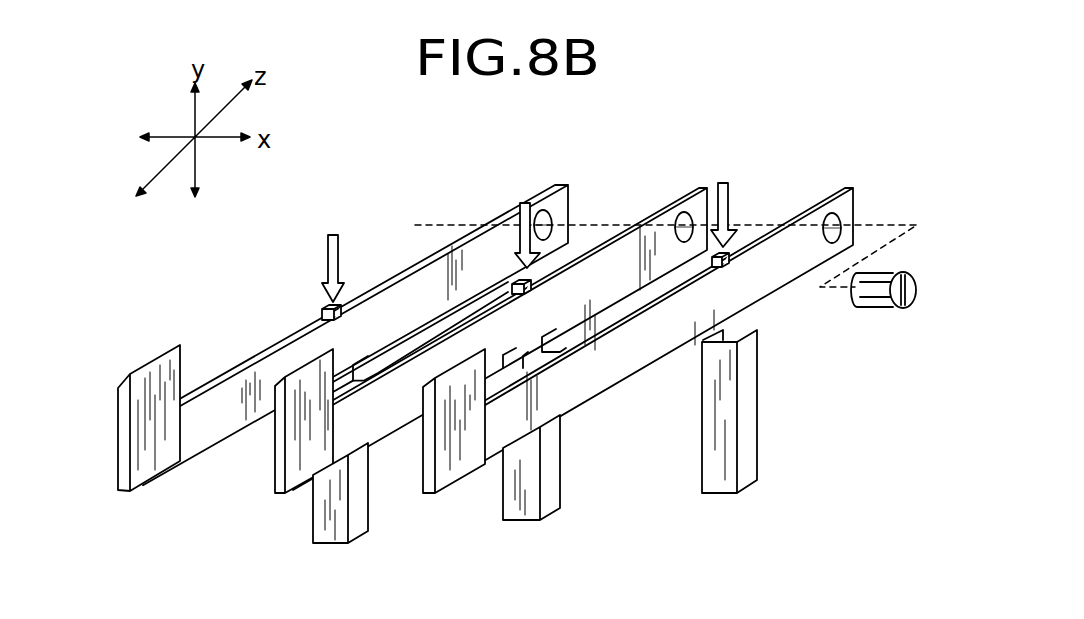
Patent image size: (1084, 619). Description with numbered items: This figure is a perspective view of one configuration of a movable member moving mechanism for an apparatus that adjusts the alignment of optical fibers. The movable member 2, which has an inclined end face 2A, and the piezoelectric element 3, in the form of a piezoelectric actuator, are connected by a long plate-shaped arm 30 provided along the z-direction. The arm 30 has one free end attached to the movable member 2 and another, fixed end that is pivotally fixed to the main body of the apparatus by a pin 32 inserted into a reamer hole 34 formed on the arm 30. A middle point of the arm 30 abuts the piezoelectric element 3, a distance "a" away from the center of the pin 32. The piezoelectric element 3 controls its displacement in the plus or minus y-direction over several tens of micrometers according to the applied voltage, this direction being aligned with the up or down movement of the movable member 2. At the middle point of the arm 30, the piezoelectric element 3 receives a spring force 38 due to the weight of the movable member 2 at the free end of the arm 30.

The movable member 2 is at (295, 452).
The inclined end face 2A is at (162, 350).
The piezoelectric element 3 is at (334, 533).
The arm 30 is at (395, 288).
The pin 32 is at (876, 302).
The reamer hole 34 is at (570, 202).
The spring force 38 is at (328, 259).